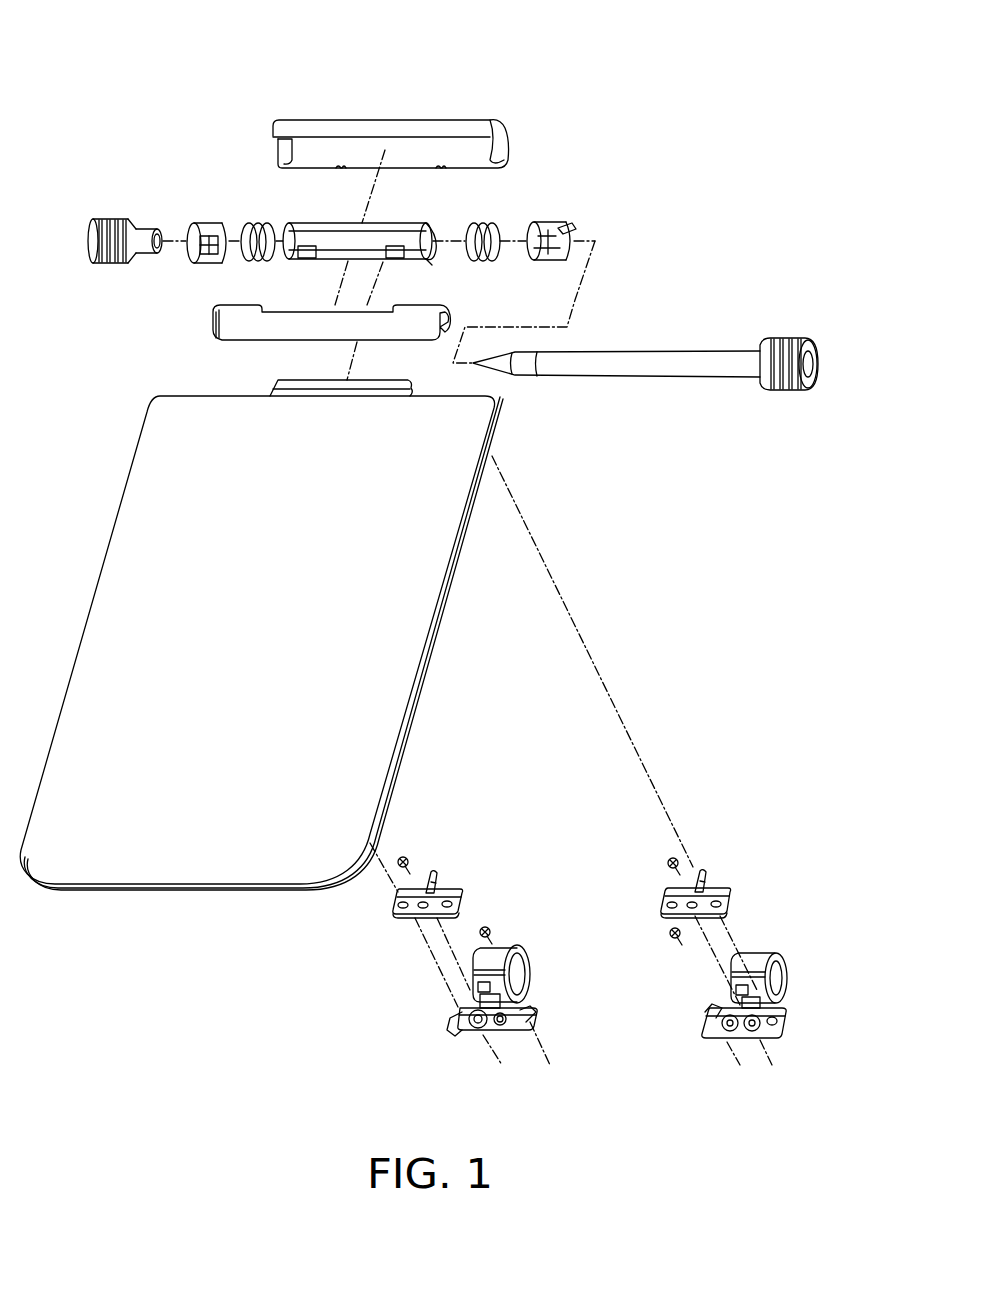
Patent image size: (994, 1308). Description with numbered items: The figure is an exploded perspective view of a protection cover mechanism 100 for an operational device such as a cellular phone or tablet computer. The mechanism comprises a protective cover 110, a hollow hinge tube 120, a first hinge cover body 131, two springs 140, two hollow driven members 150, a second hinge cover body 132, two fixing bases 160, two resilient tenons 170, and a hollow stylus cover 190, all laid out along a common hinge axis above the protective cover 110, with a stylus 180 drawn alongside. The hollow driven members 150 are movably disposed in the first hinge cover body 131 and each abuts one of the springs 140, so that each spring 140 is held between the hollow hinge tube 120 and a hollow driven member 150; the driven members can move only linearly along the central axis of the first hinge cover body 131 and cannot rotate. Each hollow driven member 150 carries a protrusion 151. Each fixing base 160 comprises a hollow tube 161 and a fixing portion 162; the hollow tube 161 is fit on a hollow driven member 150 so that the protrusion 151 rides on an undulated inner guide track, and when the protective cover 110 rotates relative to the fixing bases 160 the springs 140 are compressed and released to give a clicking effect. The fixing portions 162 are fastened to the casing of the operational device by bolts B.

The protection cover mechanism 100 is at (91, 37).
The protective cover 110 is at (143, 529).
The hollow hinge tube 120 is at (390, 228).
The first hinge cover body 131 is at (395, 118).
The second hinge cover body 132 is at (250, 330).
The spring 140 is at (245, 225).
The hollow driven member 150 is at (195, 228).
The protrusion 151 is at (575, 224).
The fixing base 160 is at (625, 998).
The hollow tube 161 is at (505, 955).
The fixing portion 162 is at (470, 1035).
The resilient tenon 170 is at (445, 882).
The stylus 180 is at (678, 370).
The hollow stylus cover 190 is at (150, 228).
The bolt B is at (400, 855).